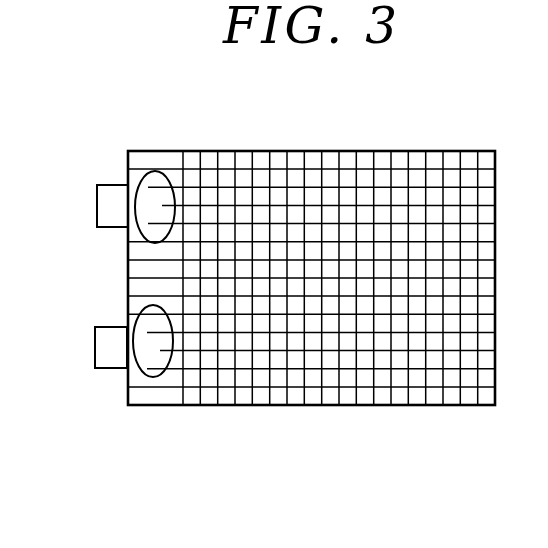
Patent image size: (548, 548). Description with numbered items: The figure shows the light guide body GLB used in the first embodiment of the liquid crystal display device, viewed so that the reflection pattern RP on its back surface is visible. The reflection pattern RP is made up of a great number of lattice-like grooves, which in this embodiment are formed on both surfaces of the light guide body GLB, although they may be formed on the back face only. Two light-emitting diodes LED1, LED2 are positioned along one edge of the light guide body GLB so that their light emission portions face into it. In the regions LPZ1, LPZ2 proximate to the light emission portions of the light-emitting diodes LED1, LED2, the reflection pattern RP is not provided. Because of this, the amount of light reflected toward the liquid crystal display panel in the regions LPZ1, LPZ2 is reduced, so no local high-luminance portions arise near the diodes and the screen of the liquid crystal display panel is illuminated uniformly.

The light guide block GLB is at (312, 150).
The reflection pattern RP is at (285, 387).
The light-emitting diode LED1 is at (95, 347).
The light-emitting diode LED2 is at (108, 193).
The region proximate to the light emission portion LPZ1 is at (135, 325).
The region proximate to the light emission portion LPZ2 is at (136, 229).